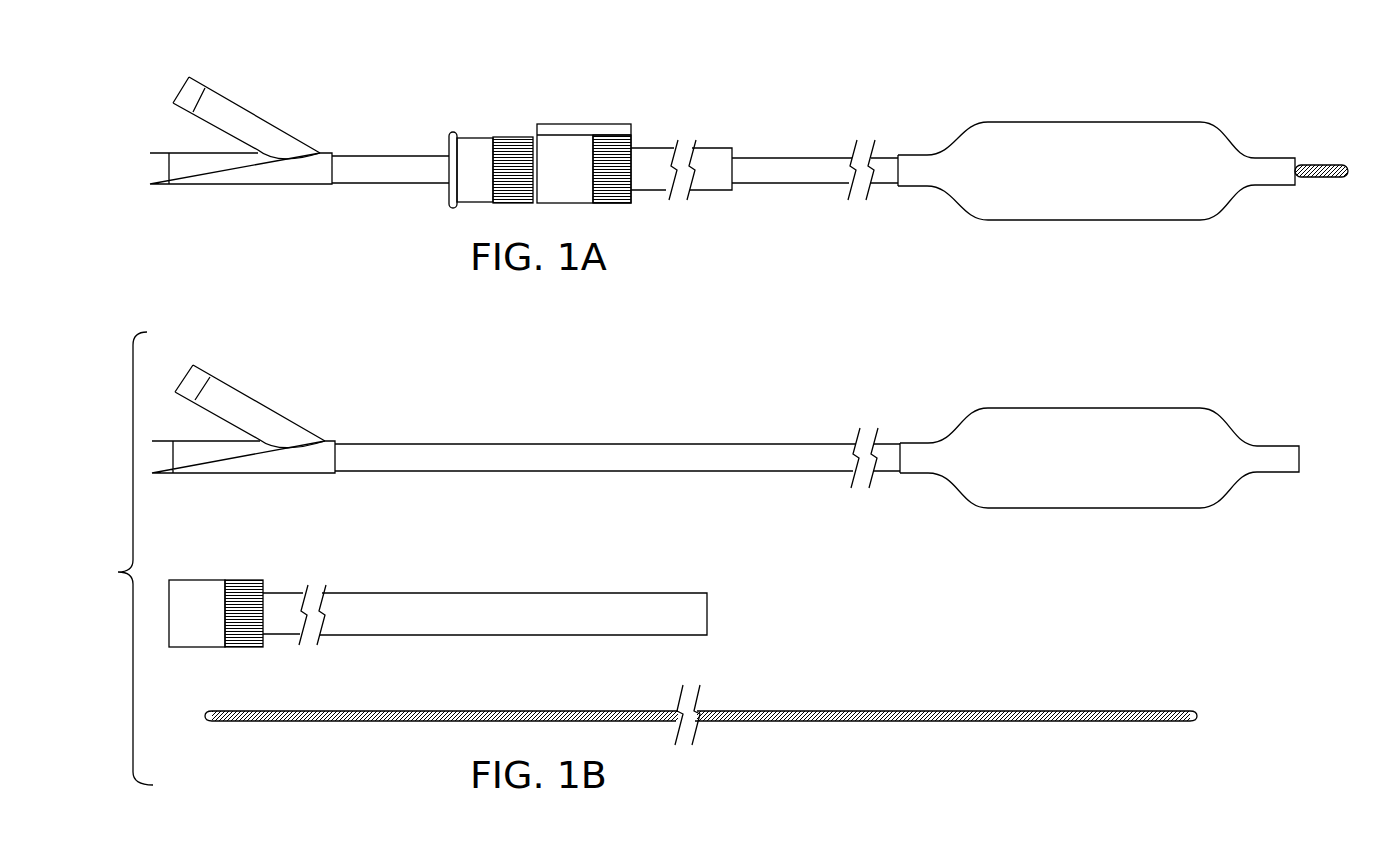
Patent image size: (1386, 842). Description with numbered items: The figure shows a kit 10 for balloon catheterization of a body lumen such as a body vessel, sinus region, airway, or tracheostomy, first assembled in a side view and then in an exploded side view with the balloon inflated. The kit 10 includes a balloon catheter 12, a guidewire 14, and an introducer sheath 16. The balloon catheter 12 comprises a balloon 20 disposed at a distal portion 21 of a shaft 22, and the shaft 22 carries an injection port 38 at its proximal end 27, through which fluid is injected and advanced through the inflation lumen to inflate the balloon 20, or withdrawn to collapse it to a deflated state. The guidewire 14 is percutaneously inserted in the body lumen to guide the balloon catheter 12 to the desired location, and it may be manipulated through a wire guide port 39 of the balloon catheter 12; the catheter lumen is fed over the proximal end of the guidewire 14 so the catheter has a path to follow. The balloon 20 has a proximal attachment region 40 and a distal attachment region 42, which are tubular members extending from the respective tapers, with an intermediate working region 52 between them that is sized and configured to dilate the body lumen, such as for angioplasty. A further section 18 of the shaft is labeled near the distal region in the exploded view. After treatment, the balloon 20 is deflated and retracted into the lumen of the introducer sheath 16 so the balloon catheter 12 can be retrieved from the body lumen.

In FIG. 1A, the kit 10 is at (754, 154).
In FIG. 1B, the kit 10 is at (710, 546).
In FIG. 1A, the balloon catheter 12 is at (832, 154).
In FIG. 1B, the balloon catheter 12 is at (835, 439).
In FIG. 1A, the guidewire 14 is at (1310, 165).
In FIG. 1B, the guidewire 14 is at (1000, 712).
In FIG. 1A, the introducer sheath 16 is at (705, 150).
In FIG. 1B, the introducer sheath 16 is at (517, 593).
In FIG. 1B, the distal shaft section 18 is at (888, 474).
In FIG. 1A, the balloon 20 is at (1081, 163).
In FIG. 1B, the balloon 20 is at (1083, 450).
In FIG. 1A, the distal portion 21 is at (1055, 235).
In FIG. 1B, the distal portion 21 is at (1067, 520).
In FIG. 1A, the shaft 22 is at (825, 185).
In FIG. 1B, the shaft 22 is at (764, 478).
In FIG. 1A, the proximal end 27 is at (422, 155).
In FIG. 1B, the proximal end 27 is at (425, 442).
In FIG. 1A, the injection port 38 is at (248, 108).
In FIG. 1B, the injection port 38 is at (250, 398).
In FIG. 1A, the wire guide port 39 is at (240, 184).
In FIG. 1B, the wire guide port 39 is at (245, 473).
In FIG. 1A, the proximal attachment region 40 is at (908, 156).
In FIG. 1B, the proximal attachment region 40 is at (912, 443).
In FIG. 1A, the distal attachment region 42 is at (1278, 158).
In FIG. 1B, the distal attachment region 42 is at (1280, 446).
In FIG. 1A, the working region 52 is at (1081, 156).